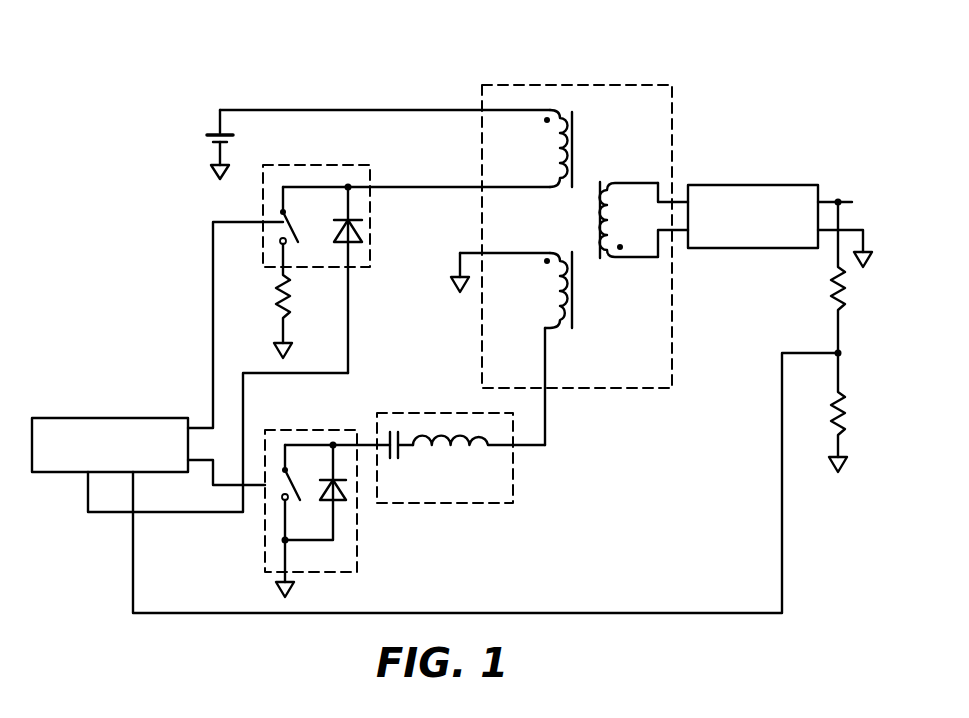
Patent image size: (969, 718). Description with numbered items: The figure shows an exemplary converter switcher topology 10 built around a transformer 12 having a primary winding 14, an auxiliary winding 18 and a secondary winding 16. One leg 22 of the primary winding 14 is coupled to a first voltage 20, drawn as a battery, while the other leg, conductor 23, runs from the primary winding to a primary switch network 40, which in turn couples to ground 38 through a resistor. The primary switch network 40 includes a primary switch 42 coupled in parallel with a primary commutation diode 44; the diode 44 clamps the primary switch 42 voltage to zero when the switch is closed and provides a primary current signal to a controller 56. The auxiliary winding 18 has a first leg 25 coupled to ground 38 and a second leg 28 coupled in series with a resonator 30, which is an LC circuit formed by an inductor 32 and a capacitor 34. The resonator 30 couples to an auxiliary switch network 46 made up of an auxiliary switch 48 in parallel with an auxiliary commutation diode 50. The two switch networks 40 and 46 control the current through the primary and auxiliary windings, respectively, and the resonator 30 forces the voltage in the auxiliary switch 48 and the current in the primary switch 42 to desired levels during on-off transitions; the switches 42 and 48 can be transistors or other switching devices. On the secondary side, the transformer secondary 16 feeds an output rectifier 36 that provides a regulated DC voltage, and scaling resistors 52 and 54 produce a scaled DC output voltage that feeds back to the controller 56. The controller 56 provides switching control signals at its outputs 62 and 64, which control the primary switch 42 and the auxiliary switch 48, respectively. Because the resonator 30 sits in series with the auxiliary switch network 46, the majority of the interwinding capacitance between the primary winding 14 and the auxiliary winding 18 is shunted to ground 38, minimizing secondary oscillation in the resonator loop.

The switcher topology 10 is at (772, 37).
The transformer 12 is at (607, 85).
The primary winding 14 is at (528, 122).
The secondary winding 16 is at (635, 248).
The auxiliary winding 18 is at (548, 315).
The first voltage 20 is at (215, 132).
The primary winding leg 22 is at (390, 110).
The second conductor 23 is at (453, 187).
The first leg 25 is at (473, 252).
The second leg 28 is at (545, 338).
The resonator 30 is at (485, 505).
The inductor 32 is at (480, 448).
The capacitor 34 is at (402, 458).
The output rectifier 36 is at (742, 185).
The ground 38 is at (451, 282).
The primary switch network 40 is at (330, 165).
The primary switch 42 is at (307, 233).
The primary commutation diode 44 is at (357, 230).
The auxiliary switch network 46 is at (357, 567).
The auxiliary switch 48 is at (298, 488).
The auxiliary commutation diode 50 is at (337, 500).
The scaling resistor 52 is at (830, 300).
The scaling resistor 54 is at (828, 410).
The controller 56 is at (123, 418).
The controller output 62 is at (197, 428).
The controller output 64 is at (203, 460).